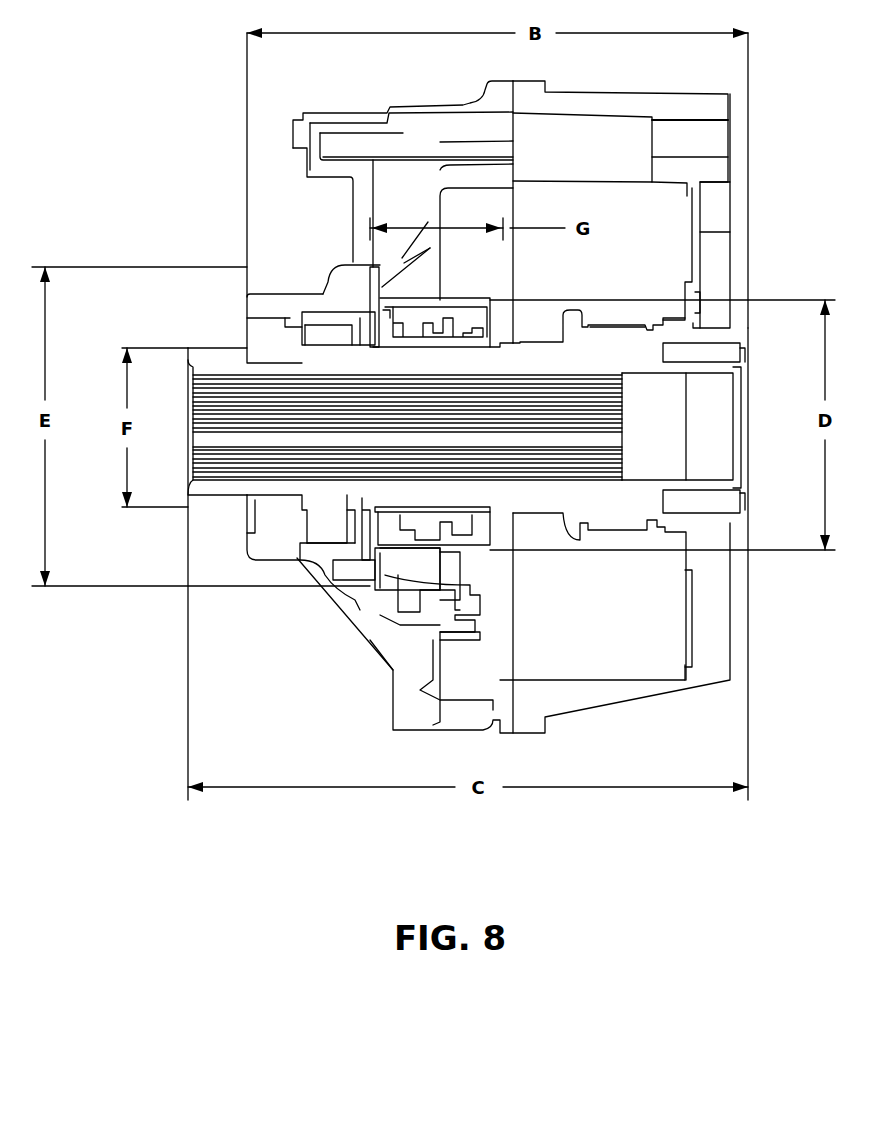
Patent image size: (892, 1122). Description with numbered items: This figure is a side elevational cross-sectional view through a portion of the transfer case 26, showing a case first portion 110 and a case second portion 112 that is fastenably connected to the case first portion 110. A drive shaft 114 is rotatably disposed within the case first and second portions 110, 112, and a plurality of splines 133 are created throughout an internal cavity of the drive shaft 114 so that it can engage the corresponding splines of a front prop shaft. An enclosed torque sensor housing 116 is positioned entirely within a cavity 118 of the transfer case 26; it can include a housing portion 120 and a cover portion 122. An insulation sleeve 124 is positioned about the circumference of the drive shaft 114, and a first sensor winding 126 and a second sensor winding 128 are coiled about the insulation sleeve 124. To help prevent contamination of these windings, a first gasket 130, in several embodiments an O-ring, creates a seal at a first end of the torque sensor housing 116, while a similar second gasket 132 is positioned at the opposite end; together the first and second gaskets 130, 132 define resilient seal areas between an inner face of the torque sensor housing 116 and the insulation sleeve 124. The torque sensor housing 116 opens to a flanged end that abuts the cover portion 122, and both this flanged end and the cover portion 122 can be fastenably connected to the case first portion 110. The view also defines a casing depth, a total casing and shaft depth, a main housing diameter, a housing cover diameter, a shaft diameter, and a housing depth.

The transfer case 26 is at (183, 102).
The case first portion 110 is at (476, 103).
The case second portion 112 is at (612, 103).
The drive shaft 114 is at (198, 368).
The torque sensor housing 116 is at (492, 555).
The cavity 118 is at (493, 580).
The housing portion 120 is at (420, 547).
The cover portion 122 is at (353, 542).
The insulation sleeve 124 is at (515, 500).
The first sensor winding 126 is at (413, 333).
The second sensor winding 128 is at (457, 338).
The first gasket 130 is at (487, 507).
The second gasket 132 is at (389, 318).
The splines 133 is at (208, 395).